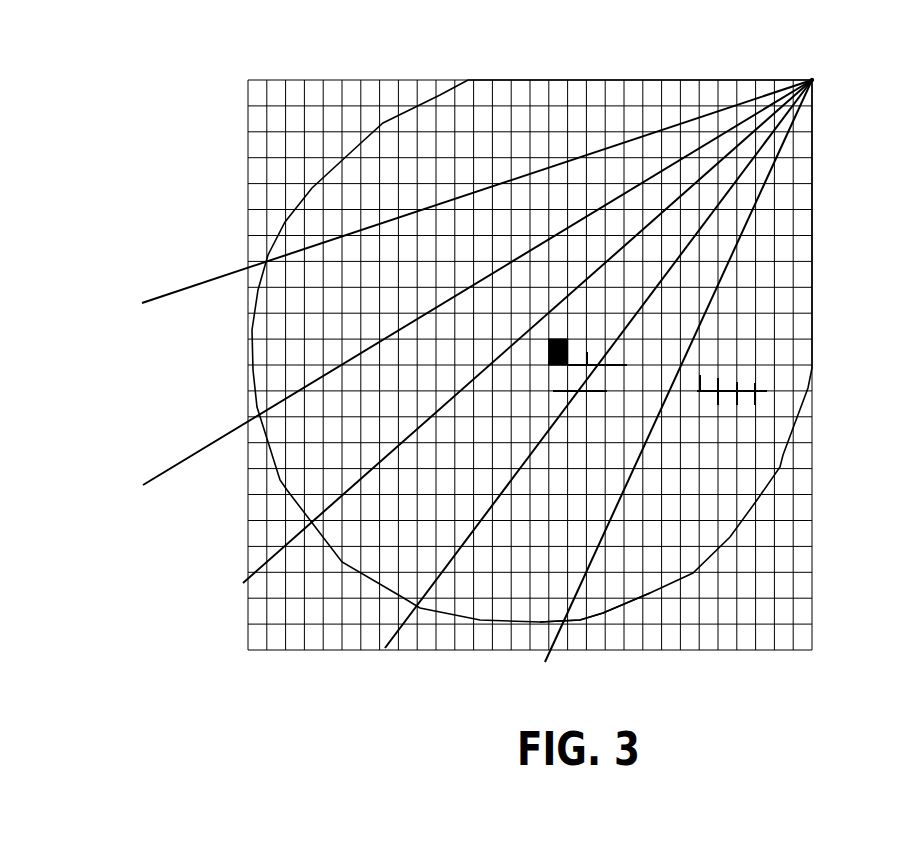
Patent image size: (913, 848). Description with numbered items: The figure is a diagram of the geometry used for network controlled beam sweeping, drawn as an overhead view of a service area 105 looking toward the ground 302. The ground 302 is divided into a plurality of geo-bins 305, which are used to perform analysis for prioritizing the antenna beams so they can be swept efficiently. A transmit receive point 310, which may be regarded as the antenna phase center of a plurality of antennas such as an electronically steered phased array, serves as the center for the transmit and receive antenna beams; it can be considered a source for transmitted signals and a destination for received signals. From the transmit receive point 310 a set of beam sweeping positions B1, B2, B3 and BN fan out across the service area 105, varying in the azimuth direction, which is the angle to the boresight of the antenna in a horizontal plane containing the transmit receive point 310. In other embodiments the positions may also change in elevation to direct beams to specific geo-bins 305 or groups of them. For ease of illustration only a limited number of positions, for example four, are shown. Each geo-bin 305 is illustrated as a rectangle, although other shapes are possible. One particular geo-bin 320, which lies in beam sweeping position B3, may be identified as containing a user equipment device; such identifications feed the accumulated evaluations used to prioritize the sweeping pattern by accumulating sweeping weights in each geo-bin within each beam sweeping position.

The ground 302 is at (812, 615).
The service area 105 is at (773, 482).
The geo-bin 305 is at (595, 610).
The transmit receive point 310 is at (813, 79).
The geo-bin 320 is at (548, 363).
The beam sweeping position B1 is at (162, 377).
The beam sweeping position B2 is at (182, 542).
The beam sweeping position B3 is at (302, 668).
The beam sweeping position BN is at (481, 668).